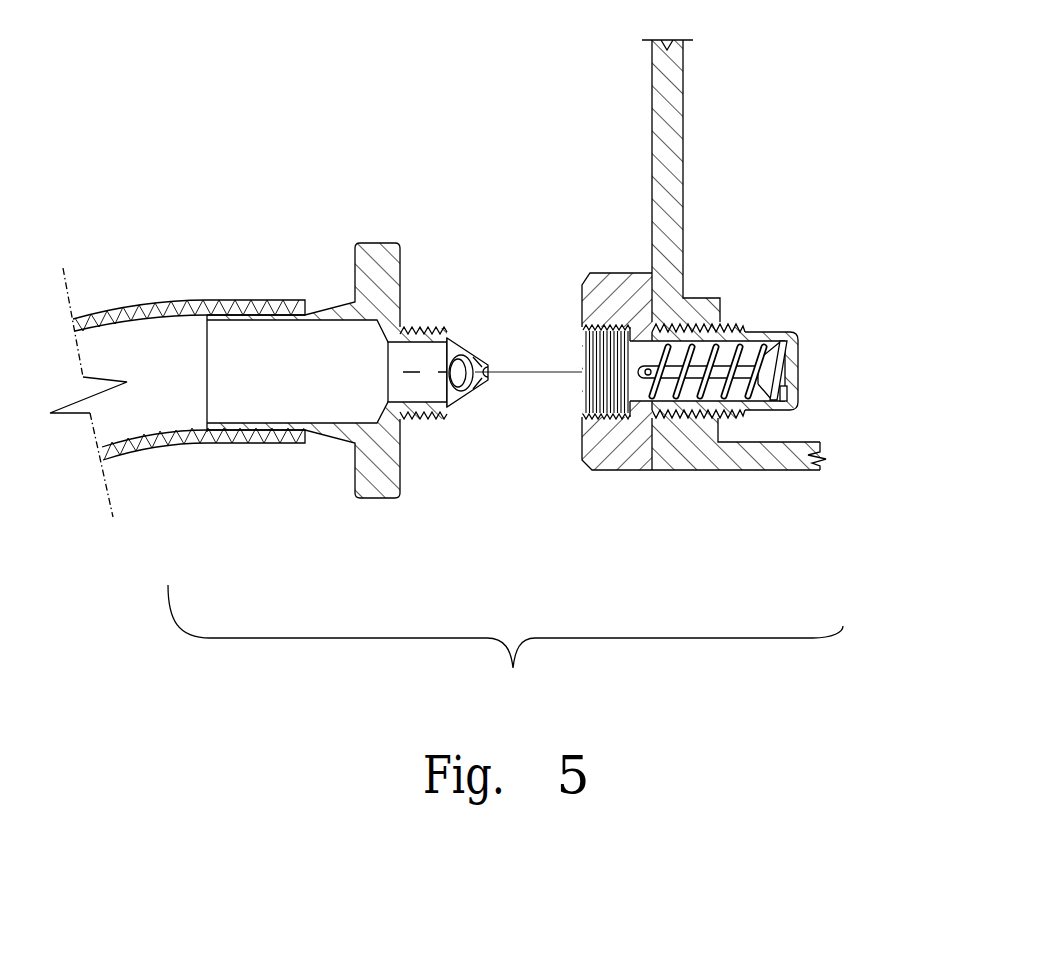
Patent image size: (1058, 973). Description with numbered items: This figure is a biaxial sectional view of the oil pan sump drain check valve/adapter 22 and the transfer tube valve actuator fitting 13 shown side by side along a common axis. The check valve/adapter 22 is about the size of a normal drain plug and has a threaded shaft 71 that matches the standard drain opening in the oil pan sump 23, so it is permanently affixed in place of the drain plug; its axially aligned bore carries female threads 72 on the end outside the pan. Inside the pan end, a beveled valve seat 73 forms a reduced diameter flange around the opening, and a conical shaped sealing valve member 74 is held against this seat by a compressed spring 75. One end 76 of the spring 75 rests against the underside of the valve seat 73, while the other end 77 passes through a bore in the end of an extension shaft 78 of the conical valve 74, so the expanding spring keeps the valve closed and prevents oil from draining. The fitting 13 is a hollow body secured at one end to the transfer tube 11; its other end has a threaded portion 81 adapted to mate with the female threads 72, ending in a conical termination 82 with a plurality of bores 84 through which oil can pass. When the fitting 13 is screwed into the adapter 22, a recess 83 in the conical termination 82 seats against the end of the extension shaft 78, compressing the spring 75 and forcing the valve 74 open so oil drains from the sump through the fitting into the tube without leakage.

The transfer tube 11 is at (190, 298).
The transfer tube valve actuator fitting 13 is at (380, 241).
The oil pan sump drain check valve/adapter 22 is at (600, 272).
The oil pan sump 23 is at (652, 80).
The threaded shaft 71 is at (745, 334).
The female threads 72 is at (585, 412).
The beveled valve seat 73 is at (800, 335).
The conical shaped sealing valve member 74 is at (800, 400).
The spring 75 is at (777, 338).
The end of the spring 76 is at (790, 388).
The other end of the spring 77 is at (649, 368).
The extension shaft 78 is at (713, 390).
The threaded portion 81 is at (405, 418).
The conical termination 82 is at (481, 353).
The recess 83 is at (493, 360).
The bores 84 is at (460, 337).